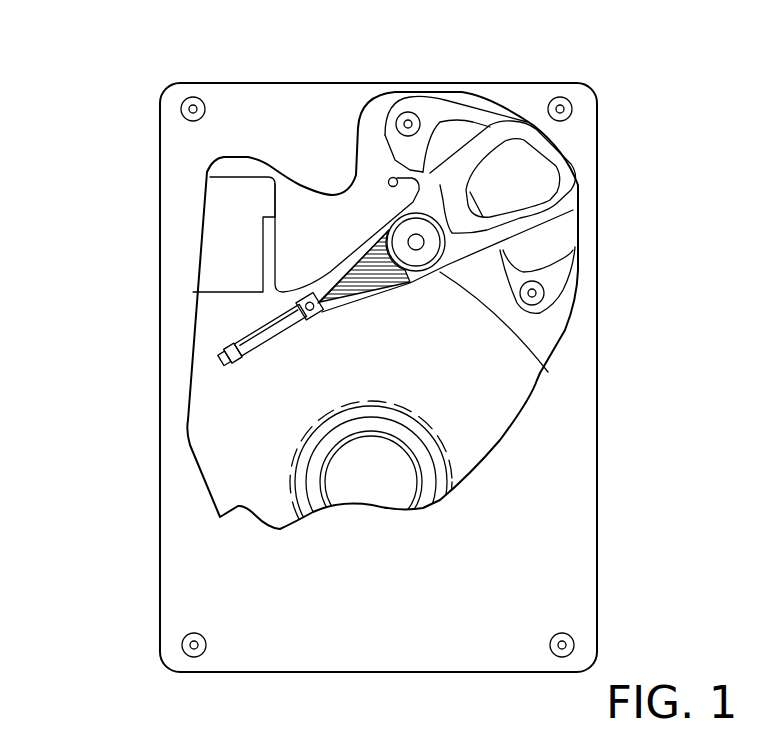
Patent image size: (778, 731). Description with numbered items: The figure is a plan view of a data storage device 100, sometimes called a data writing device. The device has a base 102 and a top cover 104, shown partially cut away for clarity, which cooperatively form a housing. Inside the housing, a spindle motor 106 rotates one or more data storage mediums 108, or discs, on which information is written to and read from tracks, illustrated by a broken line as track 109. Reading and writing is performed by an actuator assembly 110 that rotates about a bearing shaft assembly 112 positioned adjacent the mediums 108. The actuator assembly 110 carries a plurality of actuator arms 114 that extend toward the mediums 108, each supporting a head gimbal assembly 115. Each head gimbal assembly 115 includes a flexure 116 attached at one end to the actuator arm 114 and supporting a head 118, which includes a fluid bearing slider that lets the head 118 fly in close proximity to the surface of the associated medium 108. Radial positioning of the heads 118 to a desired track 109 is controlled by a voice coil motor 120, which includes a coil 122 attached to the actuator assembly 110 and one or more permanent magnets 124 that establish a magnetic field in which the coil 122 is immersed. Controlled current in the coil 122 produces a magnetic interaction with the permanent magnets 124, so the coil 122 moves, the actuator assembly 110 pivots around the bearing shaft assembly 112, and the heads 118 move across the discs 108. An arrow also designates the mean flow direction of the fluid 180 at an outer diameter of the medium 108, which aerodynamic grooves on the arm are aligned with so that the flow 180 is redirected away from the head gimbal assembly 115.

The data storage device 100 is at (127, 47).
The base 102 is at (215, 330).
The top cover 104 is at (185, 510).
The spindle motor 106 is at (378, 482).
The data storage medium 108 is at (493, 410).
The track 109 is at (448, 444).
The actuator assembly 110 is at (377, 303).
The bearing shaft assembly 112 is at (420, 244).
The actuator arm 114 is at (338, 312).
The head gimbal assembly 115 is at (233, 304).
The flexure 116 is at (276, 320).
The head 118 is at (232, 362).
The voice coil motor 120 is at (455, 137).
The coil 122 is at (540, 215).
The permanent magnet 124 is at (533, 263).
The mean flow direction of the fluid 180 is at (465, 290).